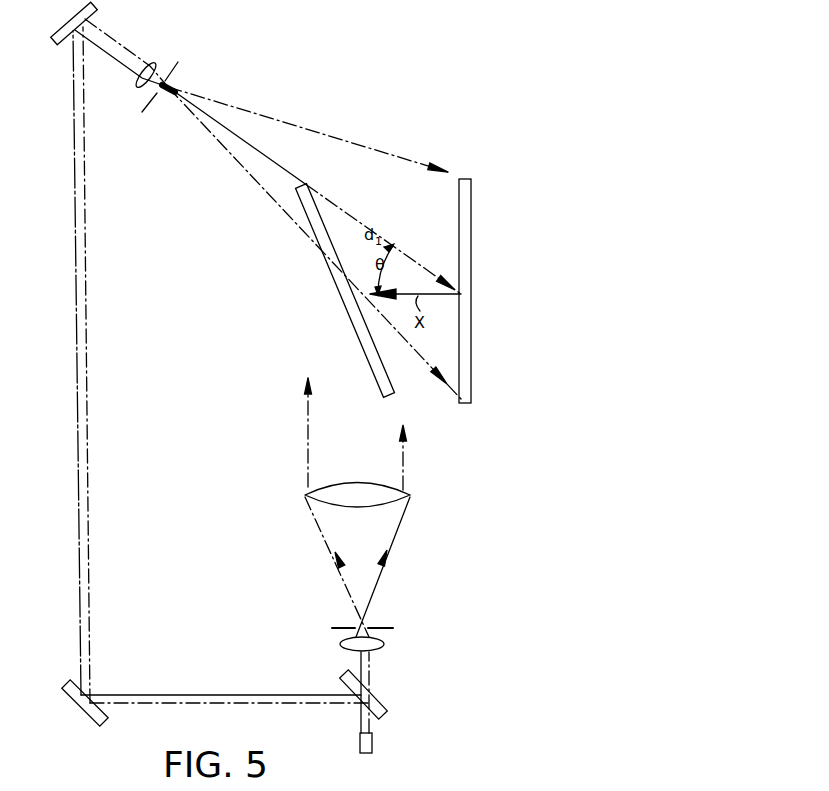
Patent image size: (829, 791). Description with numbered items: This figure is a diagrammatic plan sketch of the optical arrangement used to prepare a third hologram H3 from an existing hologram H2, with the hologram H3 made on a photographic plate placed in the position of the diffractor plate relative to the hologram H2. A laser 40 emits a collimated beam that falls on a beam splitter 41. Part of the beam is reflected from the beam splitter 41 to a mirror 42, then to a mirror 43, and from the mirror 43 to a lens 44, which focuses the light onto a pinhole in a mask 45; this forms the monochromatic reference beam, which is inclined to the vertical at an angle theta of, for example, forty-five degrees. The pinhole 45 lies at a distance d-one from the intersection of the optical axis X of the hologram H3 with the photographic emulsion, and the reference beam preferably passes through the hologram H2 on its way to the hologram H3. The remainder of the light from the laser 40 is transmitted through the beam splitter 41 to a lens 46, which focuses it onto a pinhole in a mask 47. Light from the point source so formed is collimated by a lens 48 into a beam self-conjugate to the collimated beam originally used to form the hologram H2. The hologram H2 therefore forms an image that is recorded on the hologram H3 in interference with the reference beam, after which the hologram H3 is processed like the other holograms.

The laser 40 is at (373, 743).
The beam splitter 41 is at (381, 698).
The mirror 42 is at (97, 723).
The mirror 43 is at (77, 17).
The lens 44 is at (148, 66).
The mask with pinhole 45 is at (176, 68).
The lens 46 is at (376, 648).
The mask with pinhole 47 is at (385, 625).
The lens 48 is at (403, 490).
The hologram H2 is at (348, 320).
The third hologram H3 is at (471, 198).